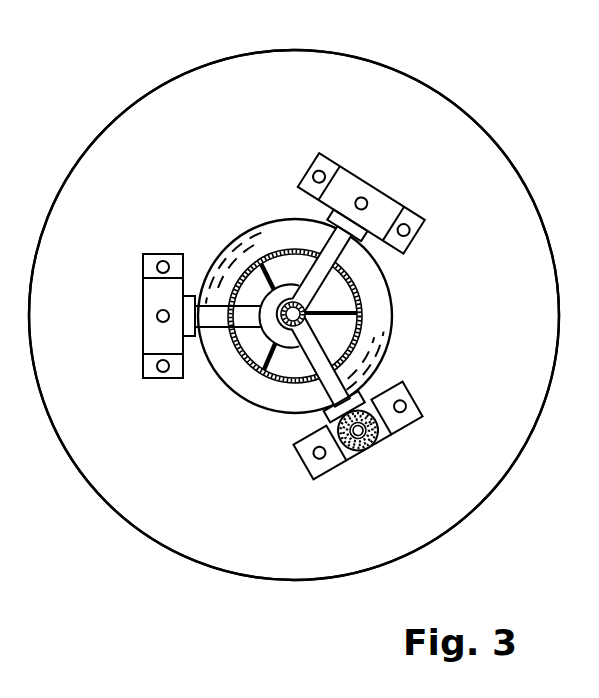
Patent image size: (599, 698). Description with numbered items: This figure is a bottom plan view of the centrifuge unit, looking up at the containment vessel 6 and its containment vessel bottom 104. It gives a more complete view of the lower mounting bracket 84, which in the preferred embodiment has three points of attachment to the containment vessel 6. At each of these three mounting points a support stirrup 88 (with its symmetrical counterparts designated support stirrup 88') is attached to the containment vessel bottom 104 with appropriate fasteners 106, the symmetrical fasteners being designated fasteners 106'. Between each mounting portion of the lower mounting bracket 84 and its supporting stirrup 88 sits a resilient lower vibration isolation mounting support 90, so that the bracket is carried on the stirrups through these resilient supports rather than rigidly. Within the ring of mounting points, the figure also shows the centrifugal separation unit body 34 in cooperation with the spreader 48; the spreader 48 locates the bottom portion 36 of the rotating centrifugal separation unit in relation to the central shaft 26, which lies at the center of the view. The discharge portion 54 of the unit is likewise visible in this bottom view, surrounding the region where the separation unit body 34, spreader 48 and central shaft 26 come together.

The containment vessel 6 is at (213, 62).
The containment vessel bottom 104 is at (238, 506).
The bottom portion 36 is at (238, 256).
The discharge portion 54 is at (285, 250).
The centrifugal separation unit body 34 is at (227, 347).
The spreader 48 is at (348, 303).
The lower mounting bracket 84 is at (318, 389).
The central shaft 26 is at (311, 325).
The support stirrup 88 is at (357, 203).
The support stirrup 88' is at (260, 366).
The resilient lower vibration isolation mounting support 90 is at (377, 394).
The fasteners 106 is at (134, 249).
The fasteners 106' is at (295, 324).